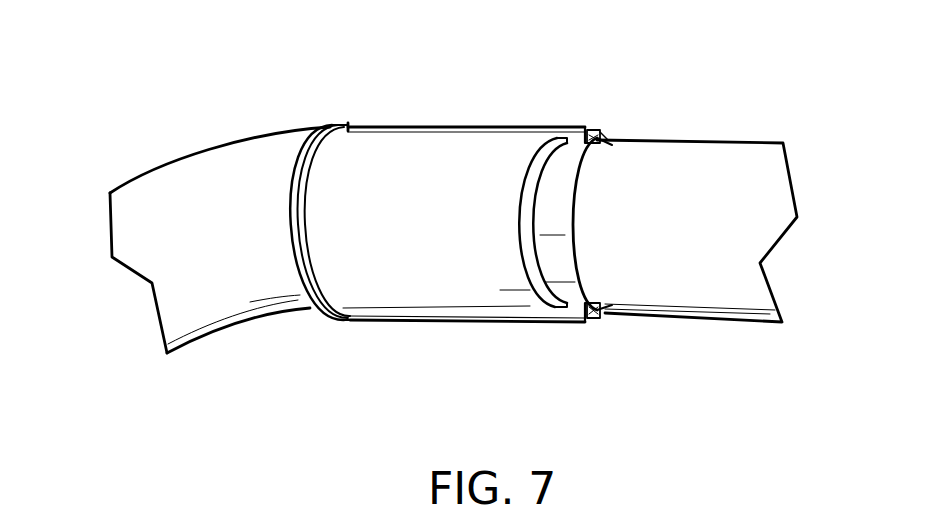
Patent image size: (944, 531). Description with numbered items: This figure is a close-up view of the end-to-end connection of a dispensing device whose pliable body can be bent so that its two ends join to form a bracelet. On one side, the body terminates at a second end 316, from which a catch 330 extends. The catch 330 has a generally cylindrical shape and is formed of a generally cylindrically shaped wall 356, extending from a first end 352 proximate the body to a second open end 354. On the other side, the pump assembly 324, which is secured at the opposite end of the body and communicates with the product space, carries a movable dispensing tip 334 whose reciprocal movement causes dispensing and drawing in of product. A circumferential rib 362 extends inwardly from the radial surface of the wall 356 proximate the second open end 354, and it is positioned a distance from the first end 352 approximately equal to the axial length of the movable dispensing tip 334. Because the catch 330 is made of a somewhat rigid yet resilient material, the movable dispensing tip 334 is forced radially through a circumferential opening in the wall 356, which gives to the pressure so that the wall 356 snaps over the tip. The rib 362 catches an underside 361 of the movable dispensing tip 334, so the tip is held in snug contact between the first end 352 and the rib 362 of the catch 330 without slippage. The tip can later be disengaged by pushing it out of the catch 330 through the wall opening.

The second end 316 is at (308, 307).
The pump assembly 324 is at (616, 330).
The catch 330 is at (440, 124).
The movable dispensing tip 334 is at (467, 263).
The first end 352 is at (314, 312).
The second open end 354 is at (591, 130).
The wall 356 is at (505, 133).
The underside 361 is at (583, 323).
The circumferential rib 362 is at (602, 133).